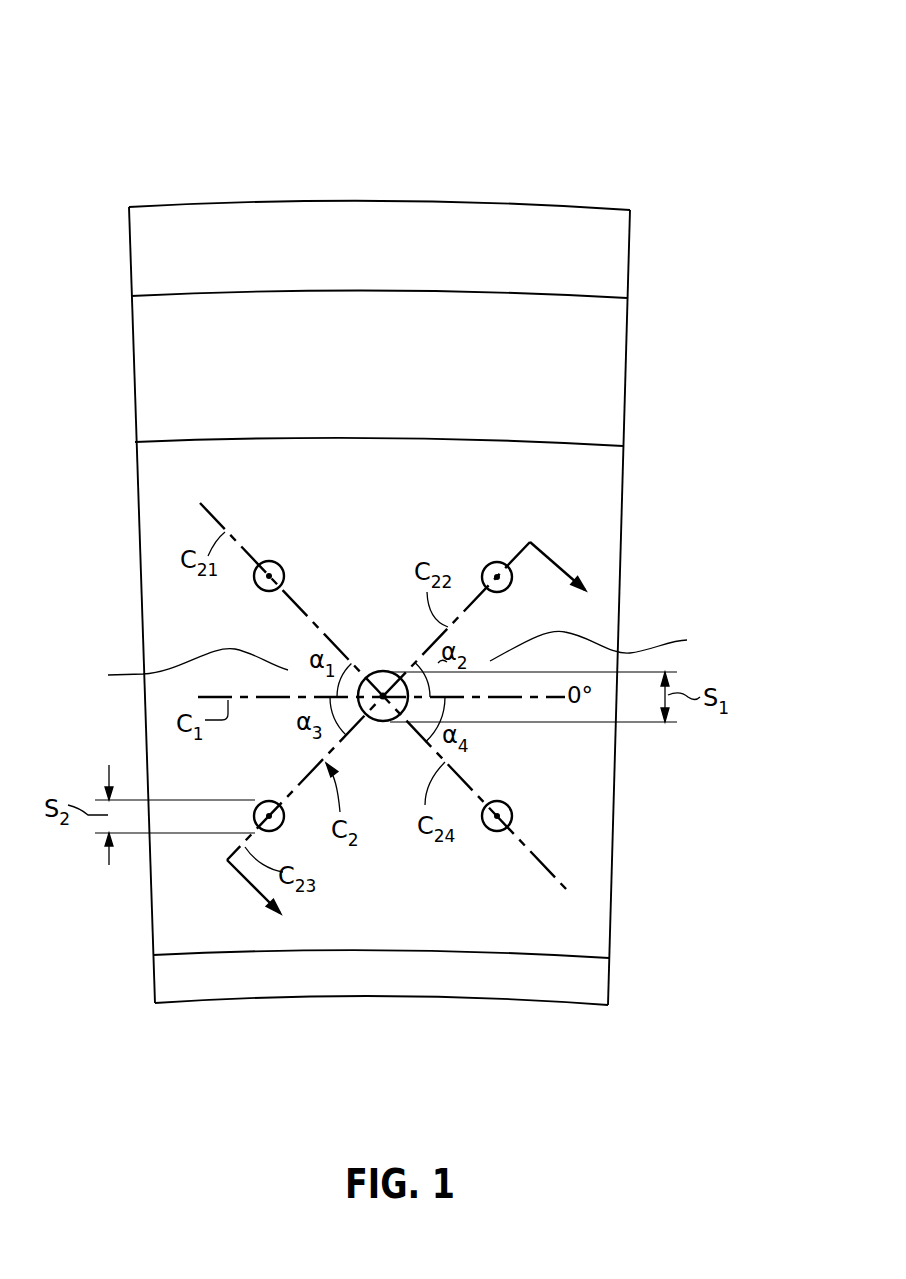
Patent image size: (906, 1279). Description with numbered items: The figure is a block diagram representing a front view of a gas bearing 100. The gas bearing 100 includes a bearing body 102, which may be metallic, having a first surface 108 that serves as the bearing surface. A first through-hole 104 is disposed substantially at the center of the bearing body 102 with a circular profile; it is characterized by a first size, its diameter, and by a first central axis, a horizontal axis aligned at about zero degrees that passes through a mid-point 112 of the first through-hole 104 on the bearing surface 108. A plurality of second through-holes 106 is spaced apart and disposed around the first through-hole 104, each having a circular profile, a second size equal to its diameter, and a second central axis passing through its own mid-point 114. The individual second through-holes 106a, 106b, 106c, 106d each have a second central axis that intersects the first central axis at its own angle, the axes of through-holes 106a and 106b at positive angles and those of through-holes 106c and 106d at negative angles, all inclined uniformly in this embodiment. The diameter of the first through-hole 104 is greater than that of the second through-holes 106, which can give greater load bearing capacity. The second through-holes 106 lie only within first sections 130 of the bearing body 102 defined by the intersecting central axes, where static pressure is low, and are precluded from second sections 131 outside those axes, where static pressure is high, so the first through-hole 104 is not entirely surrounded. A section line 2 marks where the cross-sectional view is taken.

The gas bearing 100 is at (660, 72).
The bearing body 102 is at (133, 357).
The first through-hole 104 is at (378, 690).
The plurality of second through-holes 106 is at (383, 701).
The second through-hole 106a is at (304, 550).
The second through-hole 106b is at (498, 561).
The second through-hole 106c is at (263, 802).
The second through-hole 106d is at (502, 801).
The first surface 108 is at (605, 482).
The mid-point of the first through-hole 112 is at (380, 688).
The mid-point of each second through-hole 114 is at (273, 578).
The first sections 130 is at (375, 575).
The second sections 131 is at (395, 656).
The section line 2- 2 is at (415, 736).